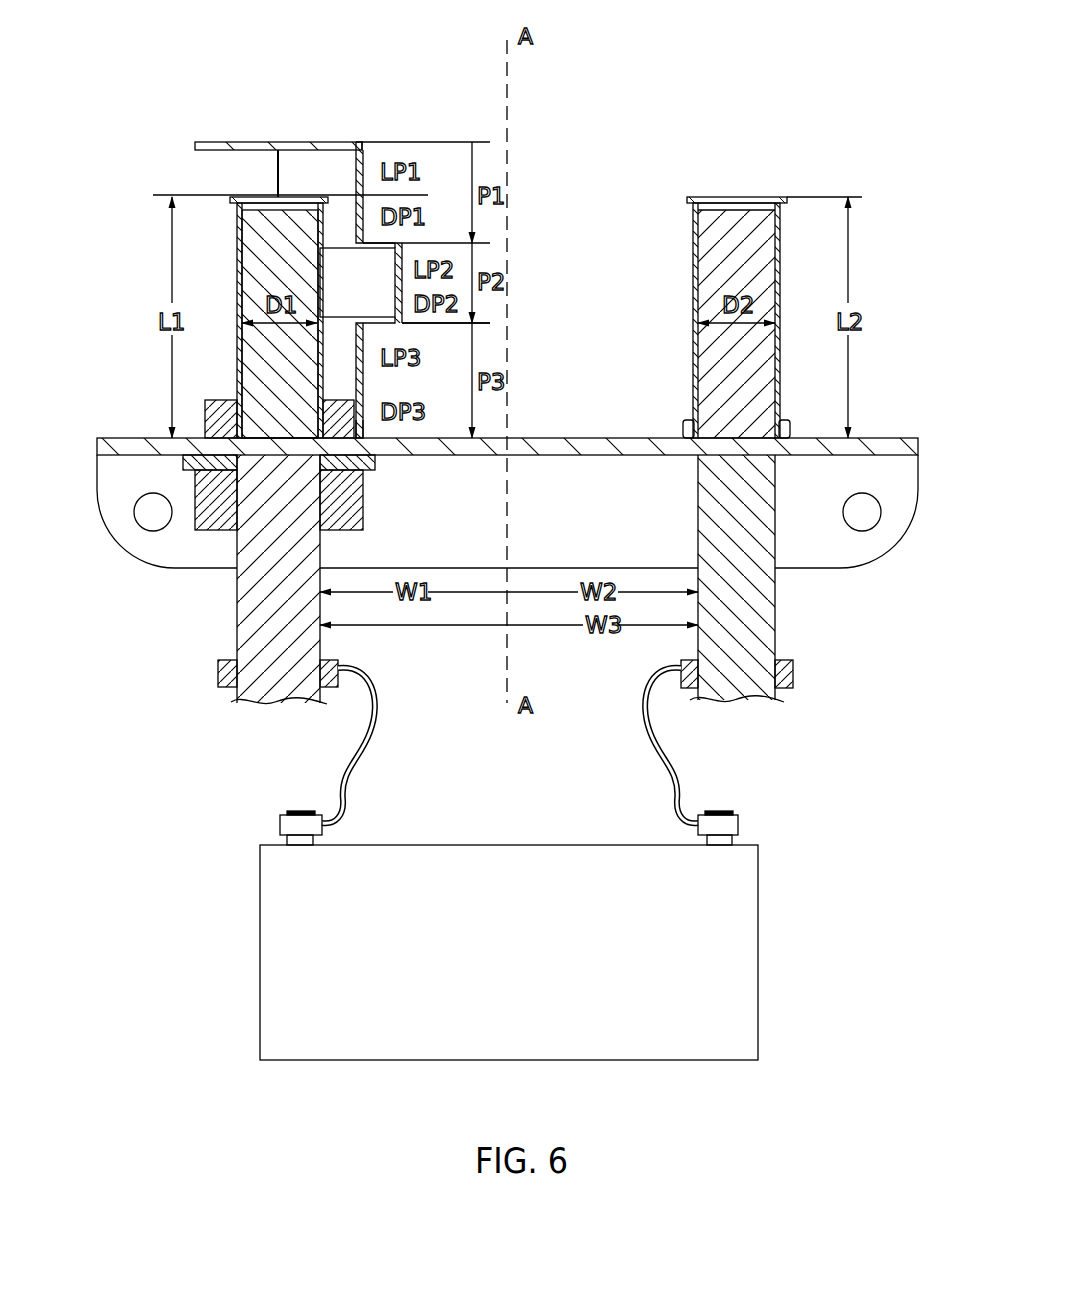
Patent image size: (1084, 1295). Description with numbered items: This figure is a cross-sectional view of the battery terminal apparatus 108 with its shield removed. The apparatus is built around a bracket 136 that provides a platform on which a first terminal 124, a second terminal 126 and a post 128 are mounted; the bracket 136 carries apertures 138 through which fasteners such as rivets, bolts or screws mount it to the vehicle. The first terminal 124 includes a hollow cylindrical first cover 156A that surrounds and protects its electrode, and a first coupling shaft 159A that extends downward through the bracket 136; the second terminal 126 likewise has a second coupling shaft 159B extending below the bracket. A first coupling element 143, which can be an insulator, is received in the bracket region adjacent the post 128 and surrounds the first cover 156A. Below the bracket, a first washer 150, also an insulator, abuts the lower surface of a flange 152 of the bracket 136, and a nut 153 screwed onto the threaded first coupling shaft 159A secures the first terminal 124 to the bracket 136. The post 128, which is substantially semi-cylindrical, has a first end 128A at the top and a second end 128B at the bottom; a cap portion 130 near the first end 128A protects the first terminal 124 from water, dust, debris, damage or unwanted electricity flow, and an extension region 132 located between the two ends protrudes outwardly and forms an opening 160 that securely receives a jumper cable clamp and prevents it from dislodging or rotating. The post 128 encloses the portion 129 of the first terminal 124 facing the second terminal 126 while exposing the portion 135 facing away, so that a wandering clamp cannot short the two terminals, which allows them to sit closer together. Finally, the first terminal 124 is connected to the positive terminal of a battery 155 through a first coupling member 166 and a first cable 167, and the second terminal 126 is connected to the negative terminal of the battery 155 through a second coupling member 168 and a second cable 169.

The battery terminal apparatus 108 is at (872, 115).
The first terminal 124 is at (237, 285).
The second terminal 126 is at (780, 242).
The post 128 is at (362, 155).
The first end 128A is at (375, 142).
The second end 128B is at (363, 440).
The portion of the first terminal 129 is at (363, 333).
The cap portion 130 is at (242, 142).
The extension region 132 is at (338, 248).
The portion of the first terminal 135 is at (237, 355).
The bracket 136 is at (921, 488).
The apertures 138 is at (153, 513).
The first coupling element 143 is at (205, 410).
The first washer 150 is at (375, 465).
The flange 152 is at (887, 438).
The nut 153 is at (363, 500).
The battery 155 is at (500, 845).
The first cover 156A is at (237, 232).
The first coupling shaft 159A is at (237, 590).
The second coupling shaft 159B is at (775, 608).
The opening 160 is at (338, 267).
The first coupling member 166 is at (218, 672).
The first cable 167 is at (369, 732).
The second coupling member 168 is at (793, 673).
The second cable 169 is at (678, 755).